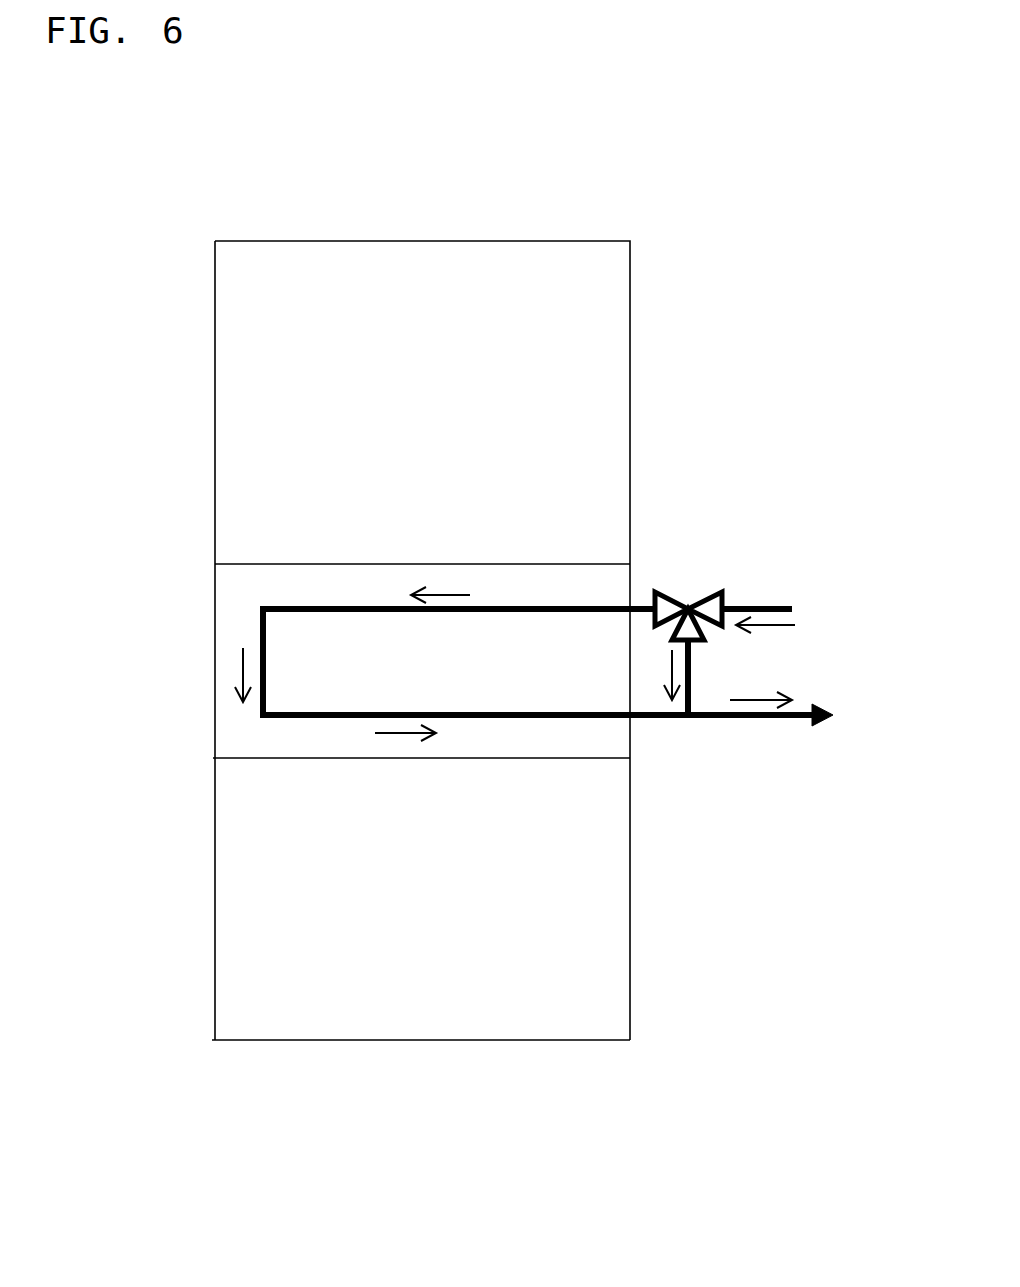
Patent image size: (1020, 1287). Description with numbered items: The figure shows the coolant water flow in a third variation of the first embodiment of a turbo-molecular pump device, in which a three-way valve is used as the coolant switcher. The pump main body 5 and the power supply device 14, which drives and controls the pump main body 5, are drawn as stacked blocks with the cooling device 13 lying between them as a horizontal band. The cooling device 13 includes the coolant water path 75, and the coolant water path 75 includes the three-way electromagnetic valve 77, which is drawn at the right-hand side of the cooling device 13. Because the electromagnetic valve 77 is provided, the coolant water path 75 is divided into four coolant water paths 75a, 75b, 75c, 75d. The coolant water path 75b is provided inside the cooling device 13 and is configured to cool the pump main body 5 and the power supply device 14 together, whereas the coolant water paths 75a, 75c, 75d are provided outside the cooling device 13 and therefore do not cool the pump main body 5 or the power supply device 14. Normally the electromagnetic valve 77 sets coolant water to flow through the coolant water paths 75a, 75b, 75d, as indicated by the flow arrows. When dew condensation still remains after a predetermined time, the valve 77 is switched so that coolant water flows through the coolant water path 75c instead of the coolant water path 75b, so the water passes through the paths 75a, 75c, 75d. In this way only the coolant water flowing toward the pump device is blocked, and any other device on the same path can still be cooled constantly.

The pump main body 5 is at (543, 282).
The cooling device 13 is at (237, 735).
The power supply device 14 is at (508, 1017).
The coolant water path 75 is at (511, 688).
The coolant water path 75a is at (765, 607).
The coolant water path 75b is at (257, 648).
The coolant water path 75c is at (691, 673).
The coolant water path 75d is at (743, 718).
The three-way electromagnetic valve 77 is at (691, 604).